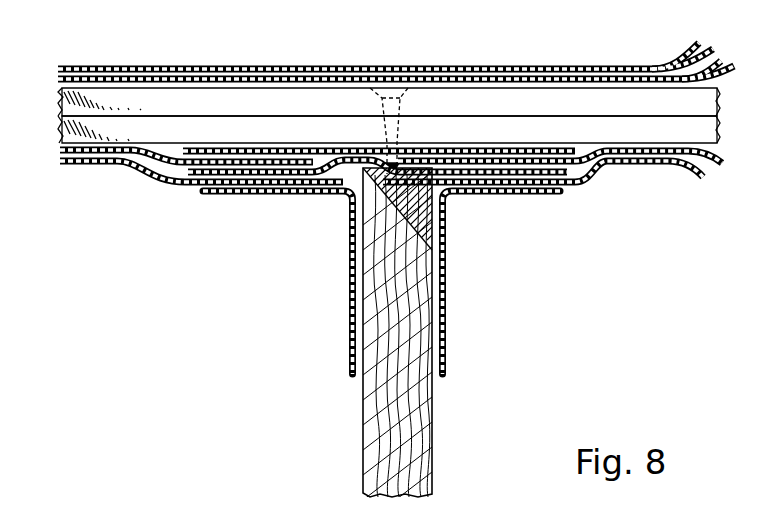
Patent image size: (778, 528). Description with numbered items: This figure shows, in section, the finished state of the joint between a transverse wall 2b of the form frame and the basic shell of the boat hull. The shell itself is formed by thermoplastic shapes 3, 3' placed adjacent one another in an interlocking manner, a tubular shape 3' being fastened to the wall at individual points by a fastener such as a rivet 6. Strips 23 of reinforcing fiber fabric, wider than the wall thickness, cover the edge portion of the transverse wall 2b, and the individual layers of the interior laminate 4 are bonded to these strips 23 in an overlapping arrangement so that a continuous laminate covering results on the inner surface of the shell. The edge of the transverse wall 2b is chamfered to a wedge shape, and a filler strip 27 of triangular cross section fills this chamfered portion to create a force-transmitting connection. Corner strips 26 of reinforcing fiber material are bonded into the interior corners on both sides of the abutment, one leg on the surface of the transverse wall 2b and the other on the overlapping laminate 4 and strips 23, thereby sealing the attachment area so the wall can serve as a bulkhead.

The transverse wall 2b is at (420, 434).
The shape 3 is at (389, 69).
The tubular shape 3' is at (389, 129).
The laminate 4 is at (276, 64).
The rivet 6 is at (392, 86).
The strip 23 is at (348, 148).
The corner strip 26 is at (286, 199).
The filler strip 27 is at (447, 217).